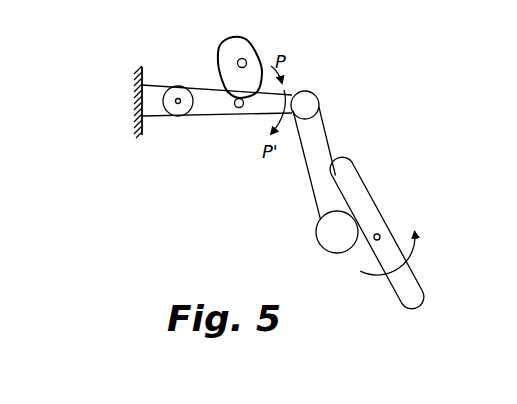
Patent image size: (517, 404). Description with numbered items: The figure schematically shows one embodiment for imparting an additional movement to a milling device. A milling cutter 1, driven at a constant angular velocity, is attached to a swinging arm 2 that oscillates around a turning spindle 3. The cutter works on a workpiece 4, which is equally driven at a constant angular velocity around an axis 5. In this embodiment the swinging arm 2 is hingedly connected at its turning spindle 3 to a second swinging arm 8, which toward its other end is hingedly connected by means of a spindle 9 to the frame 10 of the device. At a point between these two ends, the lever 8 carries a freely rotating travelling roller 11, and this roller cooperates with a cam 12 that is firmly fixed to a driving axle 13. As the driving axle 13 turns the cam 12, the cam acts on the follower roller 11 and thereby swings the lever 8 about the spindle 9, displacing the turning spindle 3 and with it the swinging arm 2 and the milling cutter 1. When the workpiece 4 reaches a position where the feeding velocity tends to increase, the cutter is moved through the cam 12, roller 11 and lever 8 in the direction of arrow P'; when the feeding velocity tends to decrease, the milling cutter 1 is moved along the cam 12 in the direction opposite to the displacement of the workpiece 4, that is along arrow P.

The milling cutter 1 is at (318, 238).
The swinging arm 2 is at (308, 172).
The turning spindle 3 is at (314, 96).
The workpiece 4 is at (400, 296).
The axis 5 is at (381, 232).
The second swinging arm 8 is at (217, 108).
The spindle 9 is at (178, 104).
The frame 10 is at (135, 110).
The travelling roller 11 is at (238, 108).
The cam 12 is at (228, 50).
The driving axle 13 is at (246, 60).